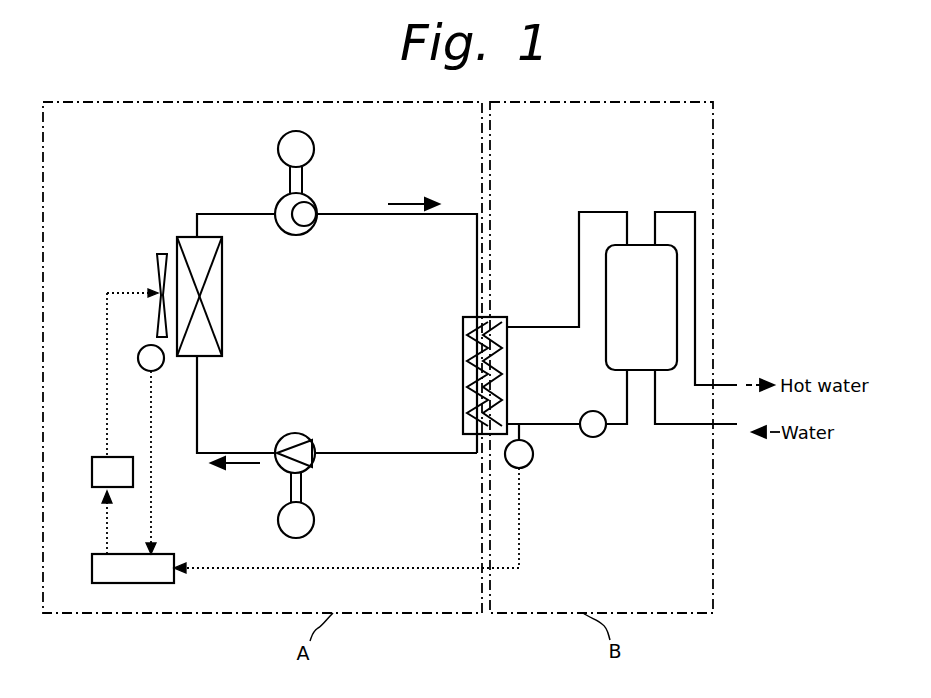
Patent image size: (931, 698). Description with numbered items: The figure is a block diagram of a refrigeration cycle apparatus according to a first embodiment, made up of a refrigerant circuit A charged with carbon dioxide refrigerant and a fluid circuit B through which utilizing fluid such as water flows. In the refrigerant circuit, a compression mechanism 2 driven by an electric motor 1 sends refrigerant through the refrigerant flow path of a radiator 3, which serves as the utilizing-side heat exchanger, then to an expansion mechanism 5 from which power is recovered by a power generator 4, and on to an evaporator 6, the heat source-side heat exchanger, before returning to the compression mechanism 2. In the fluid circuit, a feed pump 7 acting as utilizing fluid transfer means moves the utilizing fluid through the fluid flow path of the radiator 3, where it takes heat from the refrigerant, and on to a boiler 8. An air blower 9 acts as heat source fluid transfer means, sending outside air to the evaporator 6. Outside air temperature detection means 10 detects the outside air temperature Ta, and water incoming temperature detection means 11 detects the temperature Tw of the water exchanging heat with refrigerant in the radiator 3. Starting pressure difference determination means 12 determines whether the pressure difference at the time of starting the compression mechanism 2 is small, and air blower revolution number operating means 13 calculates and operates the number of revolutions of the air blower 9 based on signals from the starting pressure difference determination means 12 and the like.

The electric motor 1 is at (314, 150).
The compression mechanism 2 is at (284, 200).
The radiator 3 is at (470, 334).
The power generator 4 is at (314, 522).
The expansion mechanism 5 is at (284, 446).
The evaporator 6 is at (217, 315).
The feed pump 7 is at (593, 411).
The boiler 8 is at (663, 367).
The air blower 9 is at (160, 282).
The outside air temperature detection means 10 is at (160, 368).
The water incoming temperature detection means 11 is at (527, 466).
The starting pressure difference determination means 12 is at (163, 554).
The air blower revolution number operating means 13 is at (104, 457).